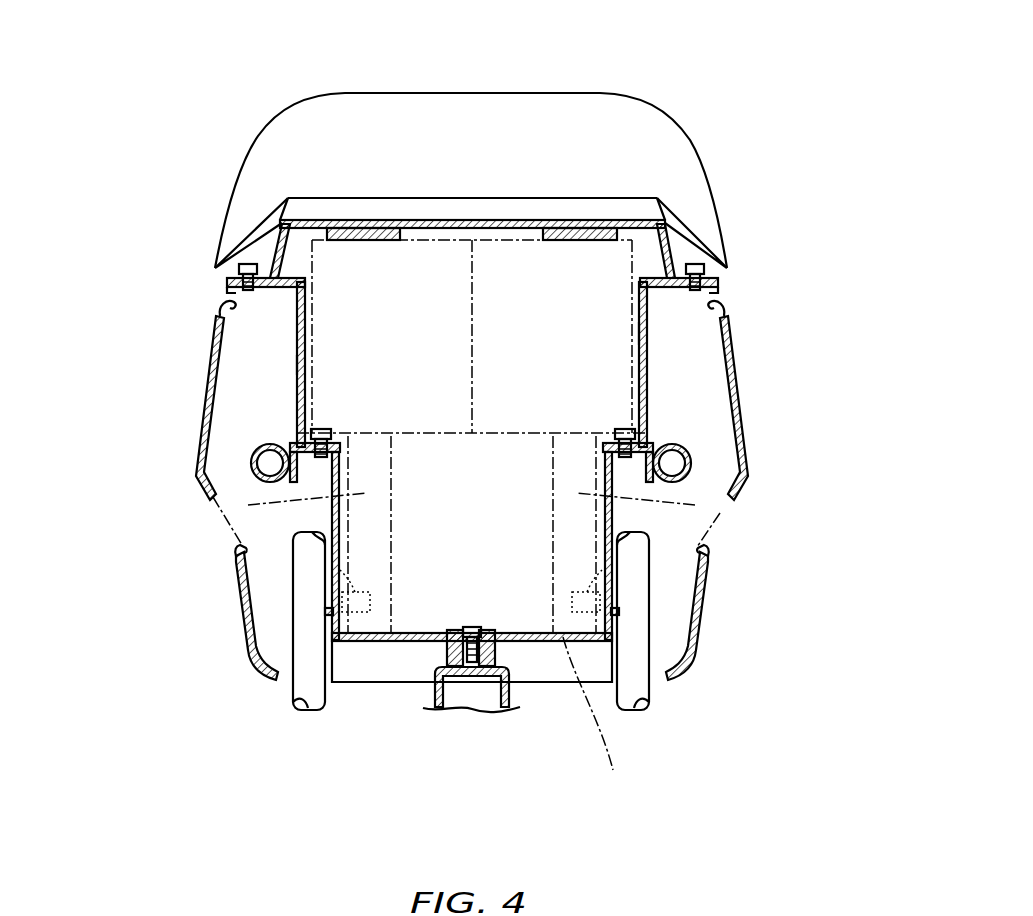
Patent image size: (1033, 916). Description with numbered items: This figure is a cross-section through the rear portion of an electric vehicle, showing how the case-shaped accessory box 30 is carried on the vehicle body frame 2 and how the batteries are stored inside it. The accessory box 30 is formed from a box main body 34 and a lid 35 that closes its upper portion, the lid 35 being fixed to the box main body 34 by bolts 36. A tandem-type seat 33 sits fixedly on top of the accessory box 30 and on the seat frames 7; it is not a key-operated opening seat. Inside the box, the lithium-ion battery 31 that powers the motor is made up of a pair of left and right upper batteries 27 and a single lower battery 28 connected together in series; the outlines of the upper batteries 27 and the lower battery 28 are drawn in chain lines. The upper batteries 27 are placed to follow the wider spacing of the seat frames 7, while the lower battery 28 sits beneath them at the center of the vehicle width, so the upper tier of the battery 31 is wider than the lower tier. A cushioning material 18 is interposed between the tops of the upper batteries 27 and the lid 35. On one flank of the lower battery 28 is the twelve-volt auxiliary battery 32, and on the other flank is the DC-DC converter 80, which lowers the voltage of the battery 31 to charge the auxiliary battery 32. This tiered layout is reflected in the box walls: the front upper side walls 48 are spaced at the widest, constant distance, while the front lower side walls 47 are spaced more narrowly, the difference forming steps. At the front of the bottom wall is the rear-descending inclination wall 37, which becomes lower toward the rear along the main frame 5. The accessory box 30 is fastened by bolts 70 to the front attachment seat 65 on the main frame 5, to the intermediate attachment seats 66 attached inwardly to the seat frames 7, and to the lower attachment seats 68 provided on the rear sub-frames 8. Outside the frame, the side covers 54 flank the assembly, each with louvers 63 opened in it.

The vehicle body frame 2 is at (472, 616).
The main frame 5 is at (467, 710).
The seat frame 7 is at (262, 445).
The rear sub-frame 8 is at (308, 640).
The cushioning material 18 is at (556, 230).
The upper battery 27 is at (430, 349).
The lower battery 28 is at (510, 543).
The accessory box 30 is at (419, 268).
The battery 31 is at (472, 436).
The auxiliary battery 32 is at (232, 517).
The seat 33 is at (369, 95).
The box main body 34 is at (297, 320).
The lid 35 is at (668, 242).
The bolt 36 is at (249, 264).
The rear-descending inclination wall 37 is at (400, 662).
The front lower side wall 47 is at (332, 580).
The front upper side wall 48 is at (297, 364).
The side cover 54 is at (210, 388).
The louver 63 is at (240, 540).
The front attachment seat 65 is at (472, 624).
The intermediate attachment seat 66 is at (292, 484).
The lower attachment seat 68 is at (600, 594).
The bolt 70 is at (320, 429).
The DC-DC converter 80 is at (596, 722).